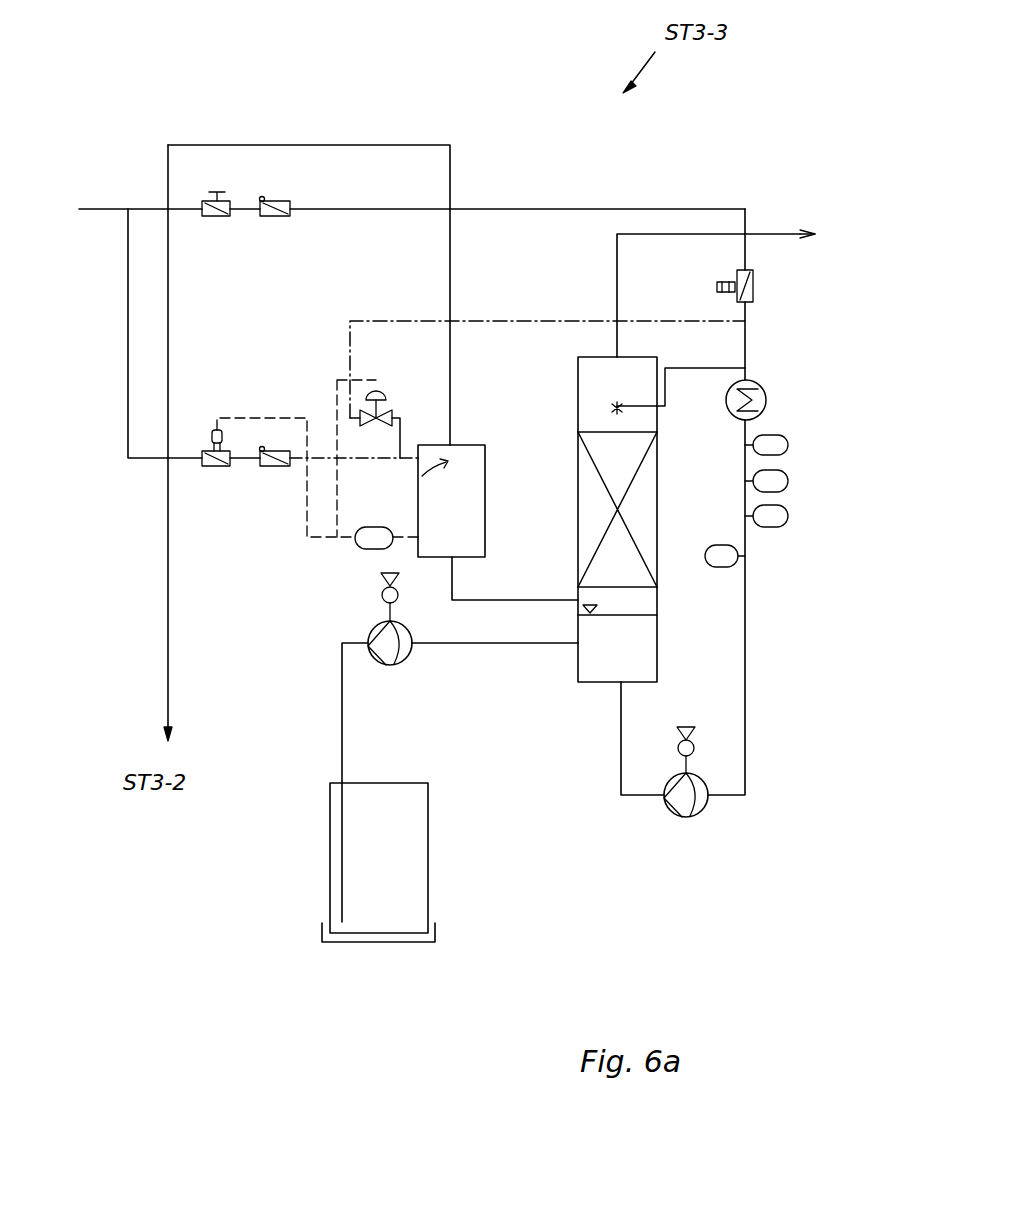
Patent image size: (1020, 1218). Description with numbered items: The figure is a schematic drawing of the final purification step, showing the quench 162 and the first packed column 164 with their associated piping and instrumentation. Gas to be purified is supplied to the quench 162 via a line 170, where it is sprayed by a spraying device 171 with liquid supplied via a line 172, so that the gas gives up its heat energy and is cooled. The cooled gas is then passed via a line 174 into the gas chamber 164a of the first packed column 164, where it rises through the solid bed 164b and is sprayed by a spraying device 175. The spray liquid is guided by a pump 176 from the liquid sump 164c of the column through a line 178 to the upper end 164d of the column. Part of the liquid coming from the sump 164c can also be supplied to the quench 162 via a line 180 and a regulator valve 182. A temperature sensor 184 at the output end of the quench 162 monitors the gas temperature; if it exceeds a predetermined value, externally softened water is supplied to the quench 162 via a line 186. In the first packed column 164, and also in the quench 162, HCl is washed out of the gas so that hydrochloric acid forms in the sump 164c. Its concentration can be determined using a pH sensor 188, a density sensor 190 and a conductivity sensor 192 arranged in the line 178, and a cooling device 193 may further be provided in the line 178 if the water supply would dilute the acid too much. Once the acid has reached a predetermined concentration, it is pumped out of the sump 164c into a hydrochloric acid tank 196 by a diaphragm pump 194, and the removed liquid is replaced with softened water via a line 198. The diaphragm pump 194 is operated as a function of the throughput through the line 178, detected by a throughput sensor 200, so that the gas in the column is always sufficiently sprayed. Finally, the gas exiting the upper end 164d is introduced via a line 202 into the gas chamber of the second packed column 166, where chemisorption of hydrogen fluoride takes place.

The quench 162 is at (473, 445).
The first packed column 164 is at (611, 568).
The gas chamber 164a is at (657, 612).
The solid bed 164b is at (588, 484).
The liquid sump 164c is at (587, 683).
The upper end 164d is at (586, 374).
The second packed column 166 is at (826, 217).
The line 170 is at (166, 631).
The spraying device 171 is at (422, 476).
The line 172 is at (403, 456).
The line 174 is at (505, 600).
The spraying device 175 is at (618, 404).
The pump 176 is at (680, 812).
The line 178 is at (748, 754).
The line 180 is at (518, 314).
The regulator valve 182 is at (376, 391).
The temperature sensor 184 is at (362, 550).
The line 186 is at (128, 368).
The pH sensor 188 is at (785, 440).
The density sensor 190 is at (787, 481).
The conductivity sensor 192 is at (787, 516).
The cooling device 193 is at (750, 388).
The diaphragm pump 194 is at (392, 666).
The hydrochloric acid tank 196 is at (414, 860).
The line 198 is at (486, 206).
The throughput sensor 200 is at (732, 563).
The line 202 is at (660, 232).